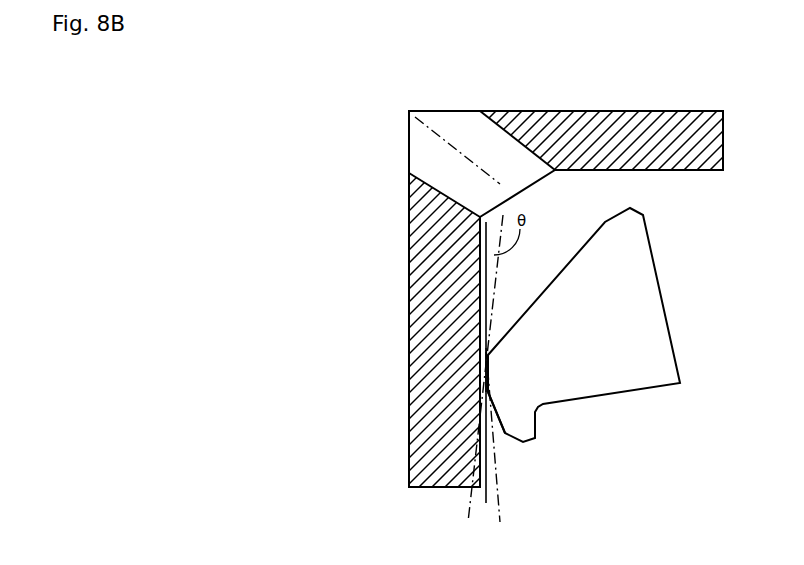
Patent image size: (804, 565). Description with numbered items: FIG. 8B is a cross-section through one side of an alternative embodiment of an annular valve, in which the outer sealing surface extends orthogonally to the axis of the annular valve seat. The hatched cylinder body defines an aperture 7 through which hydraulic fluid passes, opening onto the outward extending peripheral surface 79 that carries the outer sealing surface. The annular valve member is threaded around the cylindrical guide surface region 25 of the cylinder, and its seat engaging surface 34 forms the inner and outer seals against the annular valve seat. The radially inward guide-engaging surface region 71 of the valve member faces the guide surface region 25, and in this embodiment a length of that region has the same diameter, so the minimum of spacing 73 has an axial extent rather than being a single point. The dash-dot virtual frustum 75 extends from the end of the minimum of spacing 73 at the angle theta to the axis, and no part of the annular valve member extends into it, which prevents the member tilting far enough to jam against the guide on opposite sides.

The aperture 7 is at (430, 143).
The outward extending peripheral surface 79 is at (585, 170).
The guide surface region 25 is at (485, 318).
The seat engaging surface 34 is at (539, 297).
The minimum of spacing 73 is at (485, 371).
The guide-engaging surface region 71 is at (487, 412).
The virtual frustum 75 is at (502, 513).